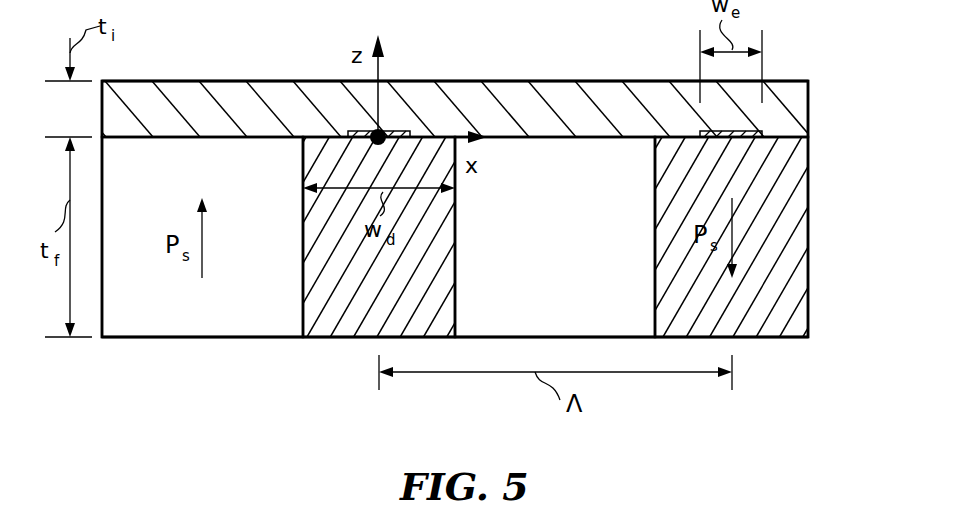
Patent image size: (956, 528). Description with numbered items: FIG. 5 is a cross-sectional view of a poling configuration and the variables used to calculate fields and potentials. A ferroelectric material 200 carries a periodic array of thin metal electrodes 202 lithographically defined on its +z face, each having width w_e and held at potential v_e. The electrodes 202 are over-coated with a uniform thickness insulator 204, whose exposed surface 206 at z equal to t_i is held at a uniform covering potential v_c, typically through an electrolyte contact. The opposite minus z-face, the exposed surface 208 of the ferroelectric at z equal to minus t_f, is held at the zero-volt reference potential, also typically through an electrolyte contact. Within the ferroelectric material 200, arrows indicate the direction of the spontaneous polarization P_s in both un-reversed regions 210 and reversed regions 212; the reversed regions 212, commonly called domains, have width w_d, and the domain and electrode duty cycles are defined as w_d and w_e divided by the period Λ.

The ferroelectric material 200 is at (808, 305).
The thin metal electrodes 202 is at (400, 130).
The insulator 204 is at (809, 101).
The exposed surface of the insulator 206 is at (263, 81).
The exposed surface of the ferroelectric 208 is at (212, 338).
The un-reversed regions 210 is at (179, 176).
The reversed regions 212 is at (355, 300).